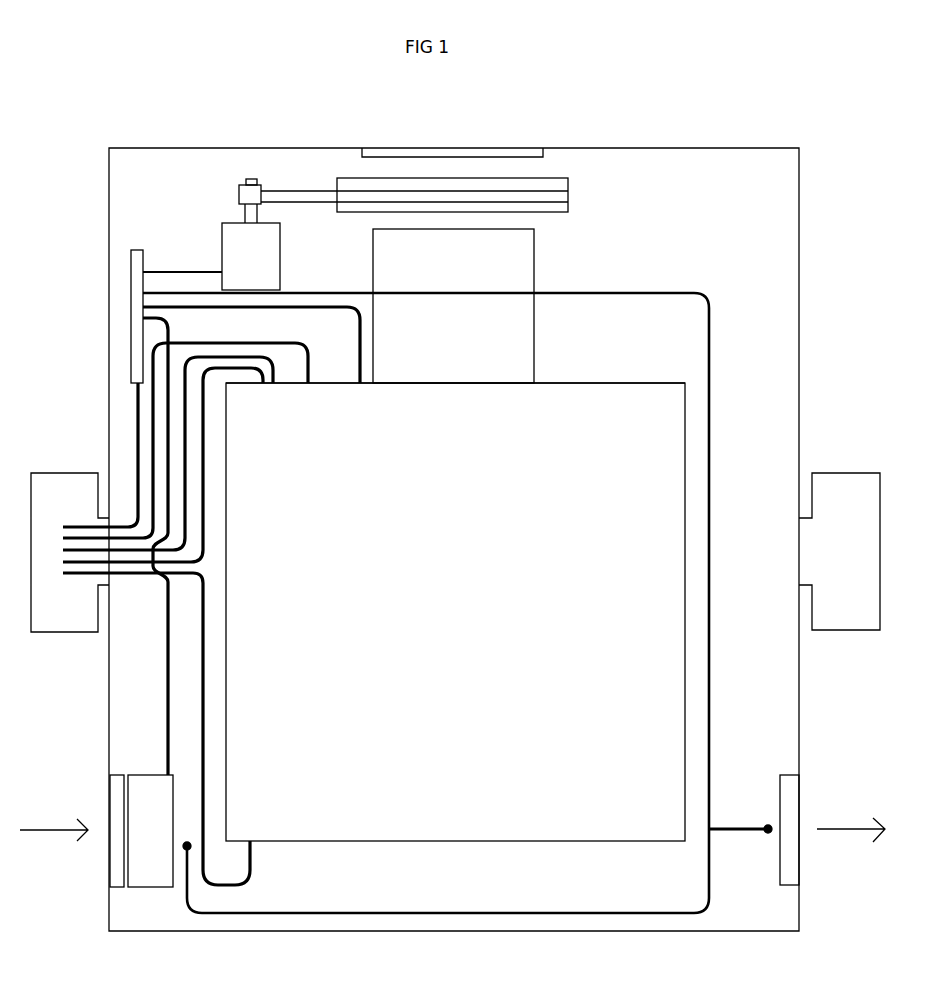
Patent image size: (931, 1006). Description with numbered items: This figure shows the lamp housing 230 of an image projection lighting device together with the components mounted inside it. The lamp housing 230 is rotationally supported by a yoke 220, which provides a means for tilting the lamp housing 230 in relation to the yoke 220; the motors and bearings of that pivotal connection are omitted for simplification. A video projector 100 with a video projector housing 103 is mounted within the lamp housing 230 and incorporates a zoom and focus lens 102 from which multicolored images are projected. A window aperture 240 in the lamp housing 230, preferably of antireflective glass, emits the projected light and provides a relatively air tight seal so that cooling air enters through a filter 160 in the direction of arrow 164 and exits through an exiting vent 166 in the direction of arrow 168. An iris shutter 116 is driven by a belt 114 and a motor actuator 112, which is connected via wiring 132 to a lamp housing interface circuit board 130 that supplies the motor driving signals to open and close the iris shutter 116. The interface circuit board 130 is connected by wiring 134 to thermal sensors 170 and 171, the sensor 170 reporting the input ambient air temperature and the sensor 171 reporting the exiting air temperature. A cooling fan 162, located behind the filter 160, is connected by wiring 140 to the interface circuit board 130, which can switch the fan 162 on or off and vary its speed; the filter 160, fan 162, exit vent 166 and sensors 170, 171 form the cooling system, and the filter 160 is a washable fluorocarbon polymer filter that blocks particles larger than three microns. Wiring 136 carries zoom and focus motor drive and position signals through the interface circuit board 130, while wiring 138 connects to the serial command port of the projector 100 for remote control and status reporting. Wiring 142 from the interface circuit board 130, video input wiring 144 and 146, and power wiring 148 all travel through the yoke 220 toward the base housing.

The video projector 100 is at (455, 612).
The zoom and focus lens 102 is at (453, 306).
The video projector housing 103 is at (580, 378).
The motor actuator 112 is at (217, 218).
The belt 114 is at (304, 203).
The iris shutter 116 is at (570, 205).
The lamp housing interface circuit board 130 is at (125, 290).
The wiring 132 is at (183, 265).
The wiring 134 is at (573, 287).
The wiring 136 is at (312, 313).
The wiring 138 is at (223, 338).
The wiring 140 is at (165, 667).
The wiring 142 is at (135, 423).
The wiring 144 is at (208, 500).
The wiring 146 is at (187, 455).
The wiring 148 is at (208, 623).
The filter 160 is at (120, 812).
The cooling fan 162 is at (150, 831).
The arrow 164 is at (55, 837).
The exiting vent 166 is at (775, 777).
The arrow 168 is at (857, 835).
The thermal sensor 170 is at (180, 840).
The thermal sensor 171 is at (762, 840).
The yoke 220 is at (77, 637).
The lamp housing 230 is at (148, 137).
The window aperture 240 is at (513, 140).